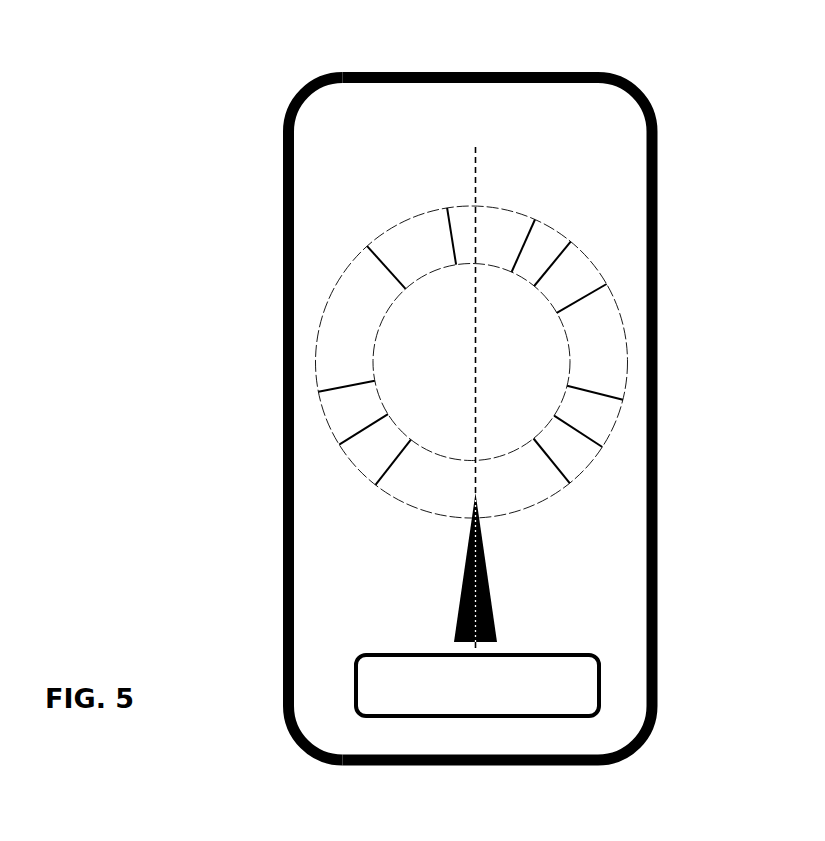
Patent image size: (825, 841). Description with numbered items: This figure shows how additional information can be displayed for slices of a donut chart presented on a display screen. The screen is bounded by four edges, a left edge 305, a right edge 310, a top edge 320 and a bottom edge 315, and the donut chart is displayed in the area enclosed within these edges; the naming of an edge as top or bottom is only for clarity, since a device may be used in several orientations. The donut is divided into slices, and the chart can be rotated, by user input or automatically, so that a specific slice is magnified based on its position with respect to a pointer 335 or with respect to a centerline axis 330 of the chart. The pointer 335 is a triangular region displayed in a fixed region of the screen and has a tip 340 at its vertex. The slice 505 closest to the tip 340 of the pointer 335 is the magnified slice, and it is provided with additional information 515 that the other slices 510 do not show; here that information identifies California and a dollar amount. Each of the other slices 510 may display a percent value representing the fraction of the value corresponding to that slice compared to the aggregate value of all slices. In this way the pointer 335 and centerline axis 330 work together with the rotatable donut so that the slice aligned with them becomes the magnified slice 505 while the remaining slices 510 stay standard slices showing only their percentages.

The left edge 305 is at (283, 268).
The right edge 310 is at (657, 382).
The bottom edge 315 is at (515, 765).
The top edge 320 is at (497, 72).
The centerline axis 330 is at (477, 178).
The pointer 335 is at (492, 600).
The tip 340 is at (473, 498).
The slice 505 is at (423, 483).
The other slices 510 is at (350, 345).
The additional information 515 is at (356, 678).